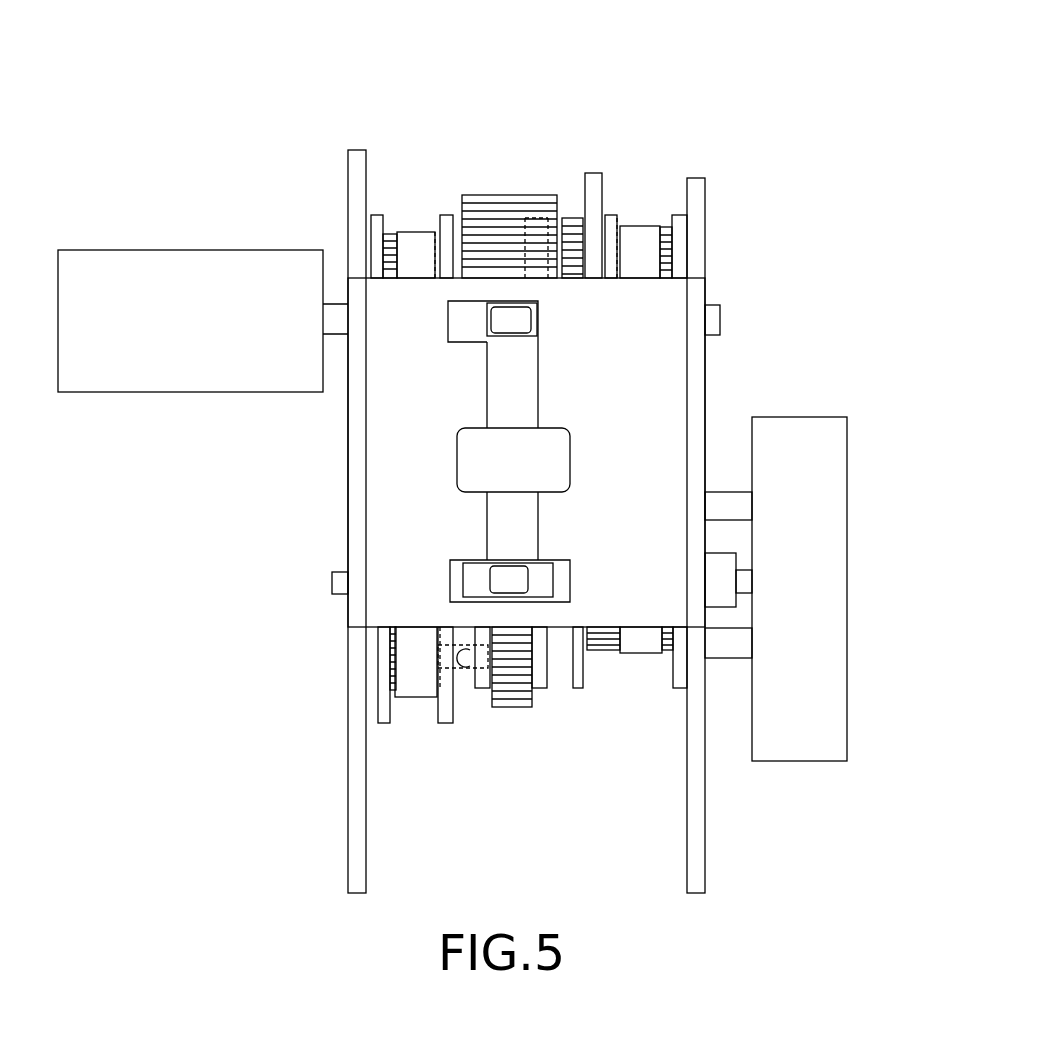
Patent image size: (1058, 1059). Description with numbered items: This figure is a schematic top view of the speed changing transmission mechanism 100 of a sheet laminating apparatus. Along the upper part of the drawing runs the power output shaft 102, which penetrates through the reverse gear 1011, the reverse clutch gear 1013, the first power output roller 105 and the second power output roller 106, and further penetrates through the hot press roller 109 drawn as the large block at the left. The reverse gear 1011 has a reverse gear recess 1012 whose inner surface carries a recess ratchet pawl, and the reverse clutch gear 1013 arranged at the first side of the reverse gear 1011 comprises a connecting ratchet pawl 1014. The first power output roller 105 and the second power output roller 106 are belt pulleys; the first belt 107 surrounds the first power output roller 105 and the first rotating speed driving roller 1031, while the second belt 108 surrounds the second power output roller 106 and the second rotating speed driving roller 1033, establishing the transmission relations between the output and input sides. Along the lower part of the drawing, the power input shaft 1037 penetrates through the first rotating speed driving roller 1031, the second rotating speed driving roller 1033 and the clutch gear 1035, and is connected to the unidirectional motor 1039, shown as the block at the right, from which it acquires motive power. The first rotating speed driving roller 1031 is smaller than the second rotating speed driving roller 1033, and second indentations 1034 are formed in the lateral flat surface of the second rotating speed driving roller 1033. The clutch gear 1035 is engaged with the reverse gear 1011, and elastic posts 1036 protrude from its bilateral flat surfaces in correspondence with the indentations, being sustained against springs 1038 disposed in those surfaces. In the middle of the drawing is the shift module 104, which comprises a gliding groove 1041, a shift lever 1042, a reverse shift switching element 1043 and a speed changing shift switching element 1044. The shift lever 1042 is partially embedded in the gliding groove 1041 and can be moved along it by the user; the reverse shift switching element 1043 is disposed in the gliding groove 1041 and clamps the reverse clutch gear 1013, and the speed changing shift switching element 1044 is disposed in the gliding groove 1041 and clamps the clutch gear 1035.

The speed changing transmission mechanism 100 is at (330, 45).
The power output shaft 102 is at (337, 312).
The shift module 104 is at (442, 465).
The first power output roller 105 is at (668, 268).
The second power output roller 106 is at (392, 262).
The first belt 107 is at (648, 240).
The second belt 108 is at (415, 242).
The hot press roller 109 is at (166, 262).
The reverse gear 1011 is at (490, 205).
The reverse gear recess 1012 is at (542, 230).
The reverse clutch gear 1013 is at (575, 233).
The connecting ratchet pawl 1014 is at (592, 218).
The first rotating speed driving roller 1031 is at (663, 633).
The second rotating speed driving roller 1033 is at (393, 670).
The second indentations 1034 is at (437, 657).
The clutch gear 1035 is at (525, 645).
The elastic posts 1036 is at (482, 657).
The power input shaft 1037 is at (332, 580).
The springs 1038 is at (490, 653).
The unidirectional motor 1039 is at (832, 503).
The gliding groove 1041 is at (515, 383).
The shift lever 1042 is at (473, 443).
The reverse shift switching element 1043 is at (517, 323).
The speed changing shift switching element 1044 is at (510, 584).